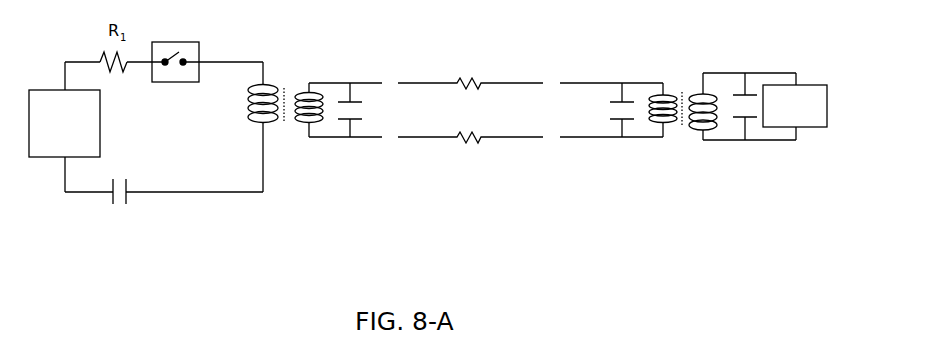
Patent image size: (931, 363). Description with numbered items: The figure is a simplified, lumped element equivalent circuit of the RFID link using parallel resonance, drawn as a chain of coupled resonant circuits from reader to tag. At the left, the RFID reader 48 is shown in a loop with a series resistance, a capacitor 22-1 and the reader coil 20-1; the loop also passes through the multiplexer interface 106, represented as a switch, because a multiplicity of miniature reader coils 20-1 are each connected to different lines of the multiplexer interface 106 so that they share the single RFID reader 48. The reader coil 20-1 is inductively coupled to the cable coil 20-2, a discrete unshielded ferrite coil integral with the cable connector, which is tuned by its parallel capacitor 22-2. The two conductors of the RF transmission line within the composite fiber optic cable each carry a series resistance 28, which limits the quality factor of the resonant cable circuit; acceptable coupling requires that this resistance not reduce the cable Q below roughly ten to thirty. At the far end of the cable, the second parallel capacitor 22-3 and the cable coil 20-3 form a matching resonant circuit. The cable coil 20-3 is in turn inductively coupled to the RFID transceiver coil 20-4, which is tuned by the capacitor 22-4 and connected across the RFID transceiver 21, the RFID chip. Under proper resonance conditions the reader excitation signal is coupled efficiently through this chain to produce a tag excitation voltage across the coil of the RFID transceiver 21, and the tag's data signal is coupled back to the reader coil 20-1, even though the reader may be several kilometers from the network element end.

The RFID reader 48 is at (64, 123).
The electronic multiplexer interface 106 is at (175, 51).
The reader coil 20-1 is at (249, 126).
The capacitor 22-1 is at (123, 221).
The cable coil 20-2 is at (303, 87).
The capacitor 22-2 is at (365, 110).
The series resistance 28 is at (470, 113).
The capacitor 22-3 is at (602, 110).
The cable coil 20-3 is at (657, 88).
The RFID transceiver coil 20-4 is at (698, 129).
The capacitor 22-4 is at (749, 82).
The RFID transceiver 21 is at (795, 95).